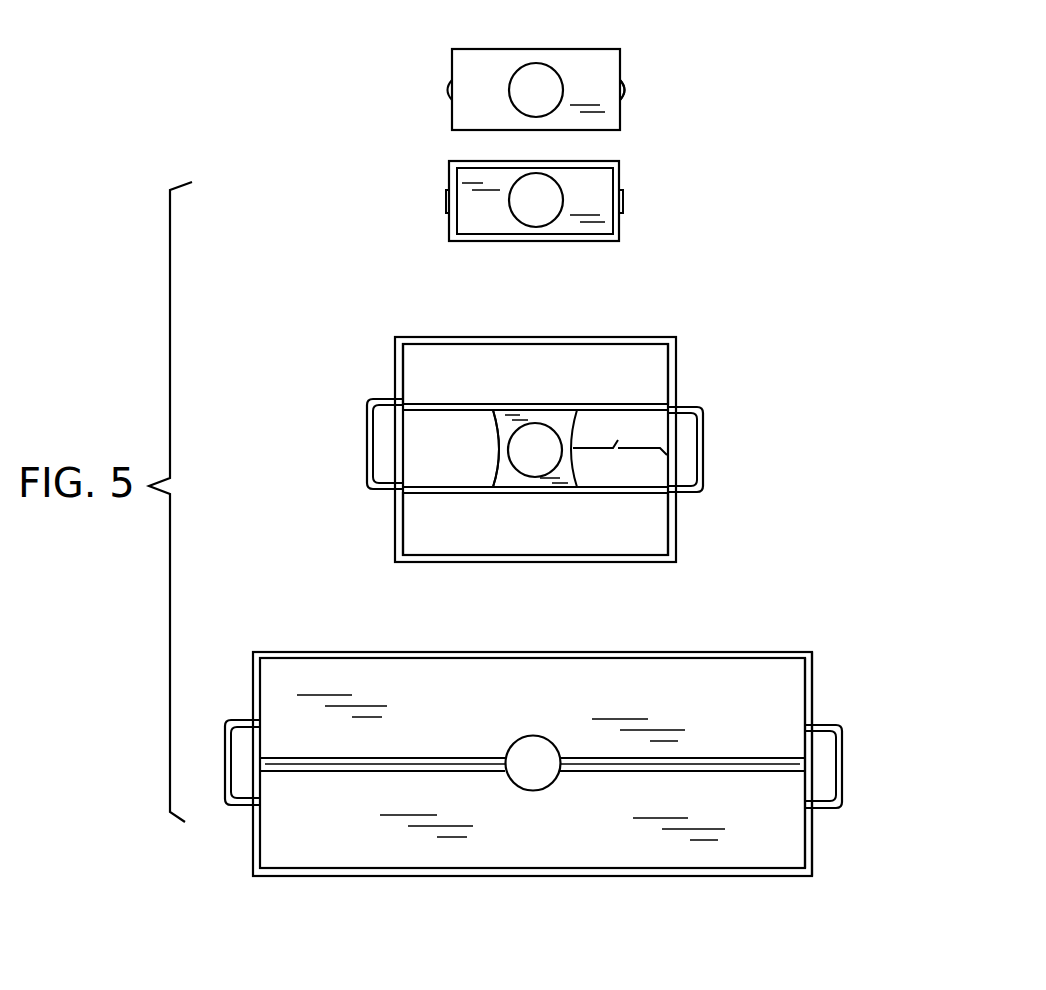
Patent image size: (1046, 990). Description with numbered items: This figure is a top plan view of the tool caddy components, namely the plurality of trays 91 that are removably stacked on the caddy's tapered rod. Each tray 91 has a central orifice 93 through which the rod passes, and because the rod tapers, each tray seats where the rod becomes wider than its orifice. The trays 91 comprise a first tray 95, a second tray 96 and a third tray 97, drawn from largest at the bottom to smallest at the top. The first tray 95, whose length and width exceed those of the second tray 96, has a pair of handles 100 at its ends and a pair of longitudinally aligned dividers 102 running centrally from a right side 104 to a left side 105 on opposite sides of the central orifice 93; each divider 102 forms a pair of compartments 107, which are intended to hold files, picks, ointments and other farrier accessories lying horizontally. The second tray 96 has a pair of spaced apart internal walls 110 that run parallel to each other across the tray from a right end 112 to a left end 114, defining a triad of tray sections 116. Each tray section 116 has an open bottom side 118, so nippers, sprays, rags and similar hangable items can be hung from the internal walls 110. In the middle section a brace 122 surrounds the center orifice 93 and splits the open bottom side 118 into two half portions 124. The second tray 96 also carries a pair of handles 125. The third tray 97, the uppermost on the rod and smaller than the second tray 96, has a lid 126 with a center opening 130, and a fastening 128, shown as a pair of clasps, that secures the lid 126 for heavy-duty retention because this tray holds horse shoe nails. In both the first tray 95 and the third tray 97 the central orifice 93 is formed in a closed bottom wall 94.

The trays 91 is at (428, 238).
The central orifice 93 is at (531, 227).
The closed bottom wall 94 is at (475, 183).
The first tray 95 is at (812, 652).
The second tray 96 is at (676, 338).
The third tray 97 is at (622, 243).
The handles 100 is at (837, 808).
The dividers 102 is at (337, 771).
The right side 104 is at (813, 698).
The left side 105 is at (253, 692).
The compartments 107 is at (730, 693).
The internal walls 110 is at (627, 495).
The right end 112 is at (467, 562).
The left end 114 is at (483, 337).
The tray sections 116 is at (402, 505).
The open bottom side 118 is at (608, 368).
The brace 122 is at (512, 423).
The half portions 124 is at (618, 440).
The handles 125 is at (370, 477).
The lid 126 is at (620, 50).
The fastening 128 is at (623, 200).
The center opening 130 is at (535, 63).